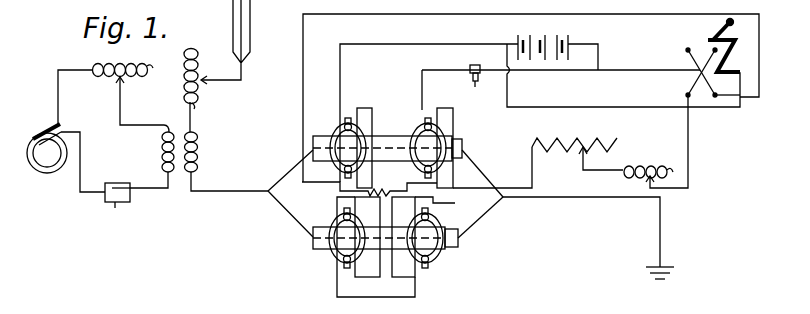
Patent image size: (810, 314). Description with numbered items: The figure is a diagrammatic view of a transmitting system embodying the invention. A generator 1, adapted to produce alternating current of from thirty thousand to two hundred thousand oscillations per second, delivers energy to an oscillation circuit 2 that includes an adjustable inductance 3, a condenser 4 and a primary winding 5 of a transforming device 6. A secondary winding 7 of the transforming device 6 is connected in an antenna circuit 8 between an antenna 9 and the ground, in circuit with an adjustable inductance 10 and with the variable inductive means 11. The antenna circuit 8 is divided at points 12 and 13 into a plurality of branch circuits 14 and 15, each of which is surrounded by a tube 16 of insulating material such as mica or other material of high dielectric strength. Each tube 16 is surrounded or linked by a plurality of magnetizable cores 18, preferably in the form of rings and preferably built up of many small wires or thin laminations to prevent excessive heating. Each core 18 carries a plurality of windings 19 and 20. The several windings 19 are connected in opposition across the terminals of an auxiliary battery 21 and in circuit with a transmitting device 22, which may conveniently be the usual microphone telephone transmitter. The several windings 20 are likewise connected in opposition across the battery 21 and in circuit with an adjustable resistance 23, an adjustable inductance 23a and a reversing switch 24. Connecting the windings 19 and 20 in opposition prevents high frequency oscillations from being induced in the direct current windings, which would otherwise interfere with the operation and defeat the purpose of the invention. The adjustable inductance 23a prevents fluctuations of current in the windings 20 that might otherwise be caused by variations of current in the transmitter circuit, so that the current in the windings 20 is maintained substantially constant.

The generator 1 is at (47, 148).
The oscillation circuit 2 is at (132, 125).
The adjustable inductance 3 is at (105, 84).
The condenser 4 is at (95, 181).
The primary winding 5 is at (162, 157).
The transforming device 6 is at (174, 137).
The secondary winding 7 is at (198, 148).
The antenna circuit 8 is at (233, 190).
The antenna 9 is at (252, 40).
The adjustable inductance 10 is at (199, 70).
The variable inductive means 11 is at (530, 161).
The point 12 is at (265, 198).
The point 13 is at (498, 202).
The branch circuit 14 is at (480, 170).
The branch circuit 15 is at (485, 224).
The tube 16 is at (389, 136).
The magnetizable core 18 is at (339, 128).
The winding 19 is at (349, 118).
The winding 20 is at (345, 178).
The auxiliary battery 21 is at (572, 42).
The transmitting device 22 is at (581, 75).
The adjustable resistance 23 is at (574, 134).
The adjustable inductance 23a is at (643, 165).
The reversing switch 24 is at (708, 47).